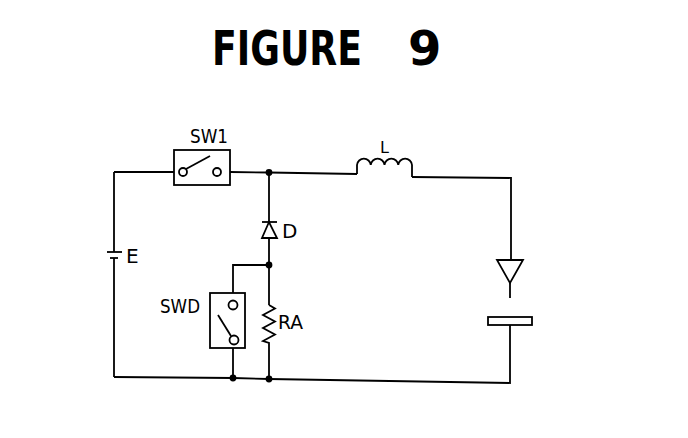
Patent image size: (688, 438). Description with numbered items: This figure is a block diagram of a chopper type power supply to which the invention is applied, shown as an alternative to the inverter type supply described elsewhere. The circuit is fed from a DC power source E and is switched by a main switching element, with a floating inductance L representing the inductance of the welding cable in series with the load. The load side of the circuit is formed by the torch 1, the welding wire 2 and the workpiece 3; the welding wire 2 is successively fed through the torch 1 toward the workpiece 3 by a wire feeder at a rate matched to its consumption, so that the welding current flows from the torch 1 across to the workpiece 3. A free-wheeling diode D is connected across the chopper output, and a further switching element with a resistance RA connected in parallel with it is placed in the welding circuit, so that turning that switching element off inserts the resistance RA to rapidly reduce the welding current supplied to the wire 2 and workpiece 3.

The torch 1 is at (500, 270).
The welding wire 2 is at (512, 291).
The workpiece 3 is at (532, 321).